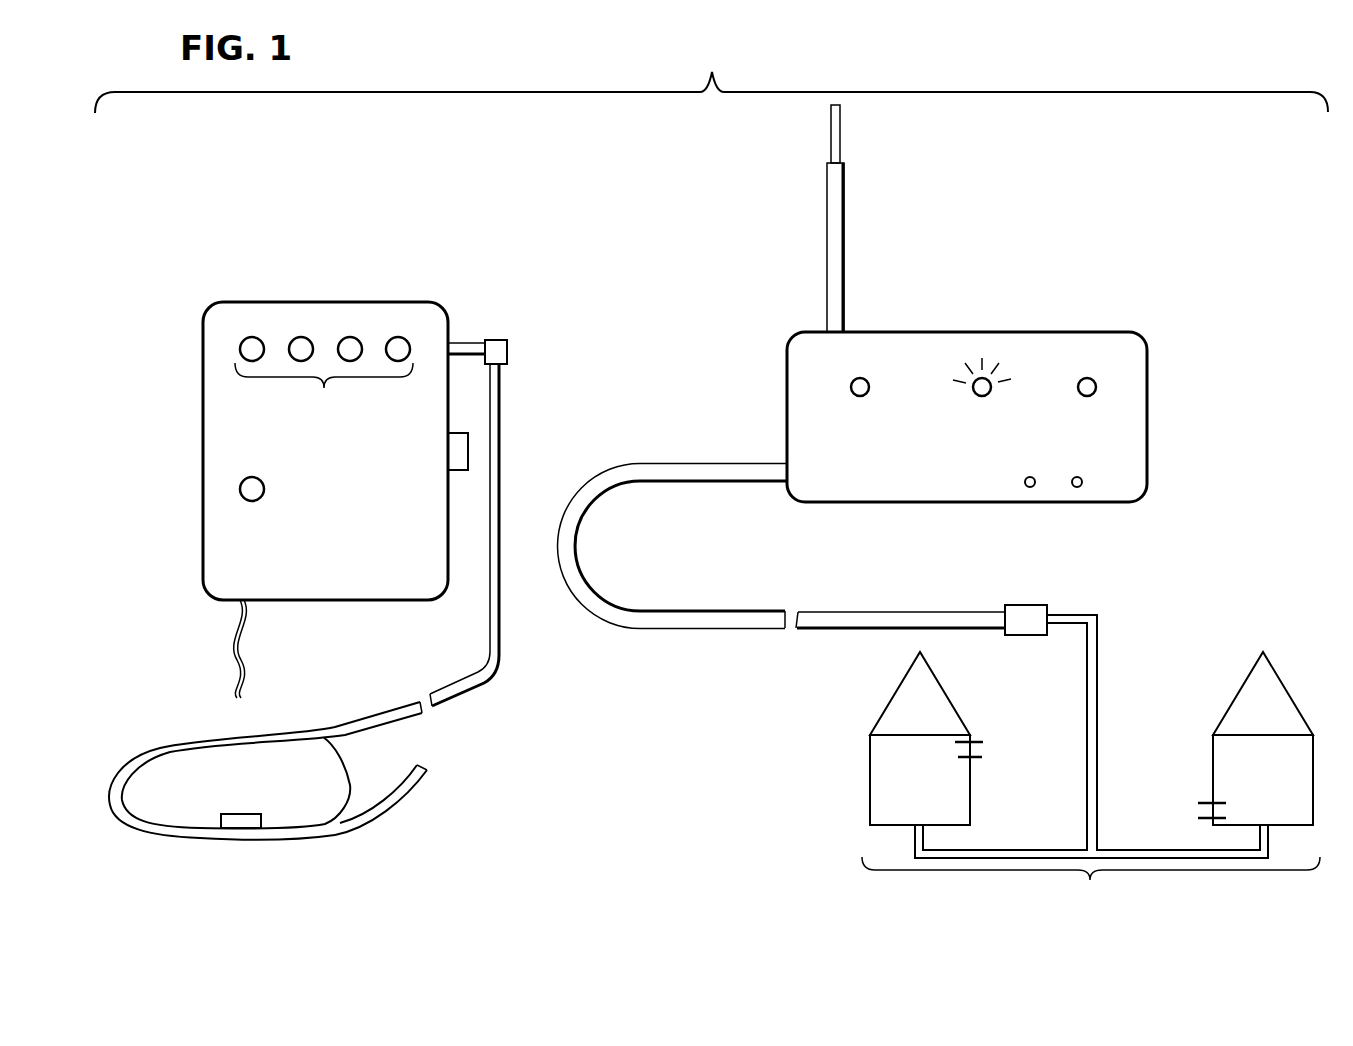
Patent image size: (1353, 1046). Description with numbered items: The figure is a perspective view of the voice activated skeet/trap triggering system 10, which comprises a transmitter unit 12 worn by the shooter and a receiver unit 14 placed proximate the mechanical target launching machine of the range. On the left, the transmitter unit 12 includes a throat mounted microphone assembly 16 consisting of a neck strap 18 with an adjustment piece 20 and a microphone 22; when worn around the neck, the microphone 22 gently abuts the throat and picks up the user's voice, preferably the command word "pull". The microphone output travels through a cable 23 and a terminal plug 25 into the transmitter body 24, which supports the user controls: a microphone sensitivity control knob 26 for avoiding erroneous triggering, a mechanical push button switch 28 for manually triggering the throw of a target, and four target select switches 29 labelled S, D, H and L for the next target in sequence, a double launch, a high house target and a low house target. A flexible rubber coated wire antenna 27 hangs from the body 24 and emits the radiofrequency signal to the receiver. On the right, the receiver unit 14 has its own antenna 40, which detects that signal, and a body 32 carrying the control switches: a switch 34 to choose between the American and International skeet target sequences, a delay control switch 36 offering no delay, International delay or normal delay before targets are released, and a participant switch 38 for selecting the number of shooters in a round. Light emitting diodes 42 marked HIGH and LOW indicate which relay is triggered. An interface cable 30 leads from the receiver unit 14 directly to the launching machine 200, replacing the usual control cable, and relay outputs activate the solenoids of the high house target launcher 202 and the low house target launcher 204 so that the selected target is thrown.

The voice activated skeet/trap triggering system 10 is at (711, 79).
The transmitter unit 12 is at (188, 517).
The receiver unit 14 is at (1104, 317).
The throat mounted microphone assembly 16 is at (273, 788).
The neck strap 18 is at (143, 757).
The adjustment piece 20 is at (385, 810).
The microphone 22 is at (242, 813).
The cable 23 is at (505, 640).
The transmitter body 24 is at (214, 570).
The terminal plug 25 is at (489, 340).
The microphone sensitivity control knob 26 is at (468, 450).
The antenna 27 is at (235, 650).
The mechanical push button switch 28 is at (265, 488).
The target select switches 29 is at (324, 369).
The interface cable 30 is at (875, 612).
The body 32 is at (962, 487).
The switch 34 is at (1095, 381).
The delay control switch 36 is at (868, 382).
The participant switch 38 is at (976, 396).
The antenna 40 is at (827, 223).
The light emitting diodes 42 is at (1032, 487).
The launcher system 200 is at (1050, 764).
The high house target launcher 202 is at (870, 775).
The low house target launcher 204 is at (1213, 760).